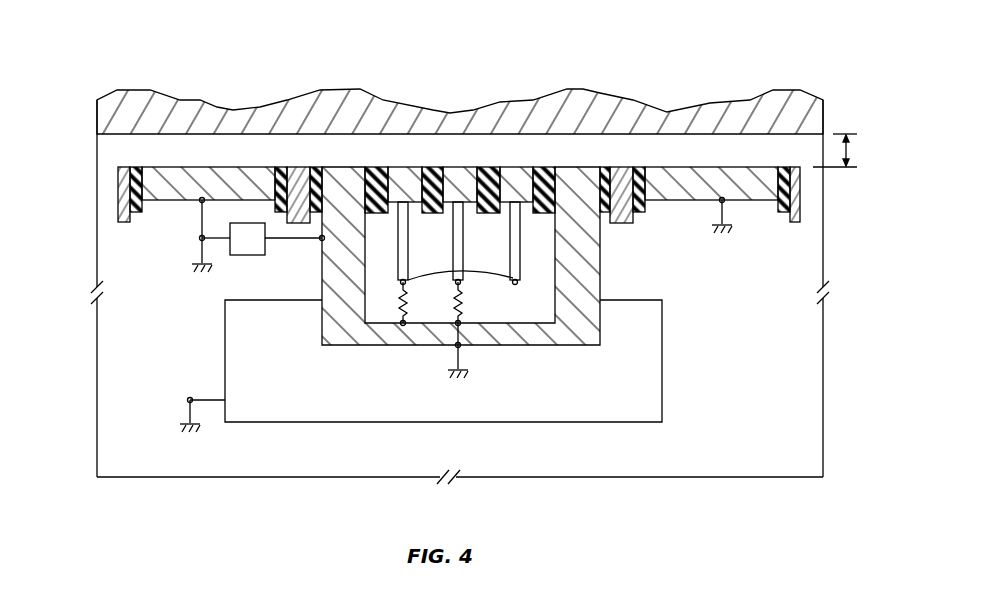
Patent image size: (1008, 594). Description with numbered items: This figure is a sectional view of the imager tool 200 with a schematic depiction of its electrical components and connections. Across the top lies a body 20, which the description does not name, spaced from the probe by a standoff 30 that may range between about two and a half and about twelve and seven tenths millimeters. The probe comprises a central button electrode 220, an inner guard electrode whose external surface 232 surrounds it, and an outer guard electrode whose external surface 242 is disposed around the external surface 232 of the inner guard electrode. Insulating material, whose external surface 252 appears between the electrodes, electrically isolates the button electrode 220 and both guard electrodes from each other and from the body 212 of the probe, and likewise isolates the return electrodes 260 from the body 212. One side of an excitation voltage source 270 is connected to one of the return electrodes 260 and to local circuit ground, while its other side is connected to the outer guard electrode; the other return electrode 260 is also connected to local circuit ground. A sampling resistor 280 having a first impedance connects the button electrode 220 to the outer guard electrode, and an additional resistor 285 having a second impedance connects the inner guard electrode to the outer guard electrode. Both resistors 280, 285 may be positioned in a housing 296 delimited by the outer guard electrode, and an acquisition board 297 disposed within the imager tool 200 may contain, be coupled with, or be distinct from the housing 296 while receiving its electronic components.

The substrate 20 is at (135, 98).
The imager tool 200 is at (213, 148).
The standoff 30 is at (848, 134).
The return electrodes 260 is at (208, 167).
The body 212 is at (293, 167).
The external surface 252 is at (298, 167).
The external surface 242 is at (313, 167).
The external surface 232 is at (405, 167).
The button electrode 220 is at (460, 172).
The housing 296 is at (322, 340).
The additional resistor 285 is at (403, 323).
The sampling resistor 280 is at (457, 323).
The excitation voltage source 270 is at (247, 256).
The acquisition board 297 is at (443, 361).